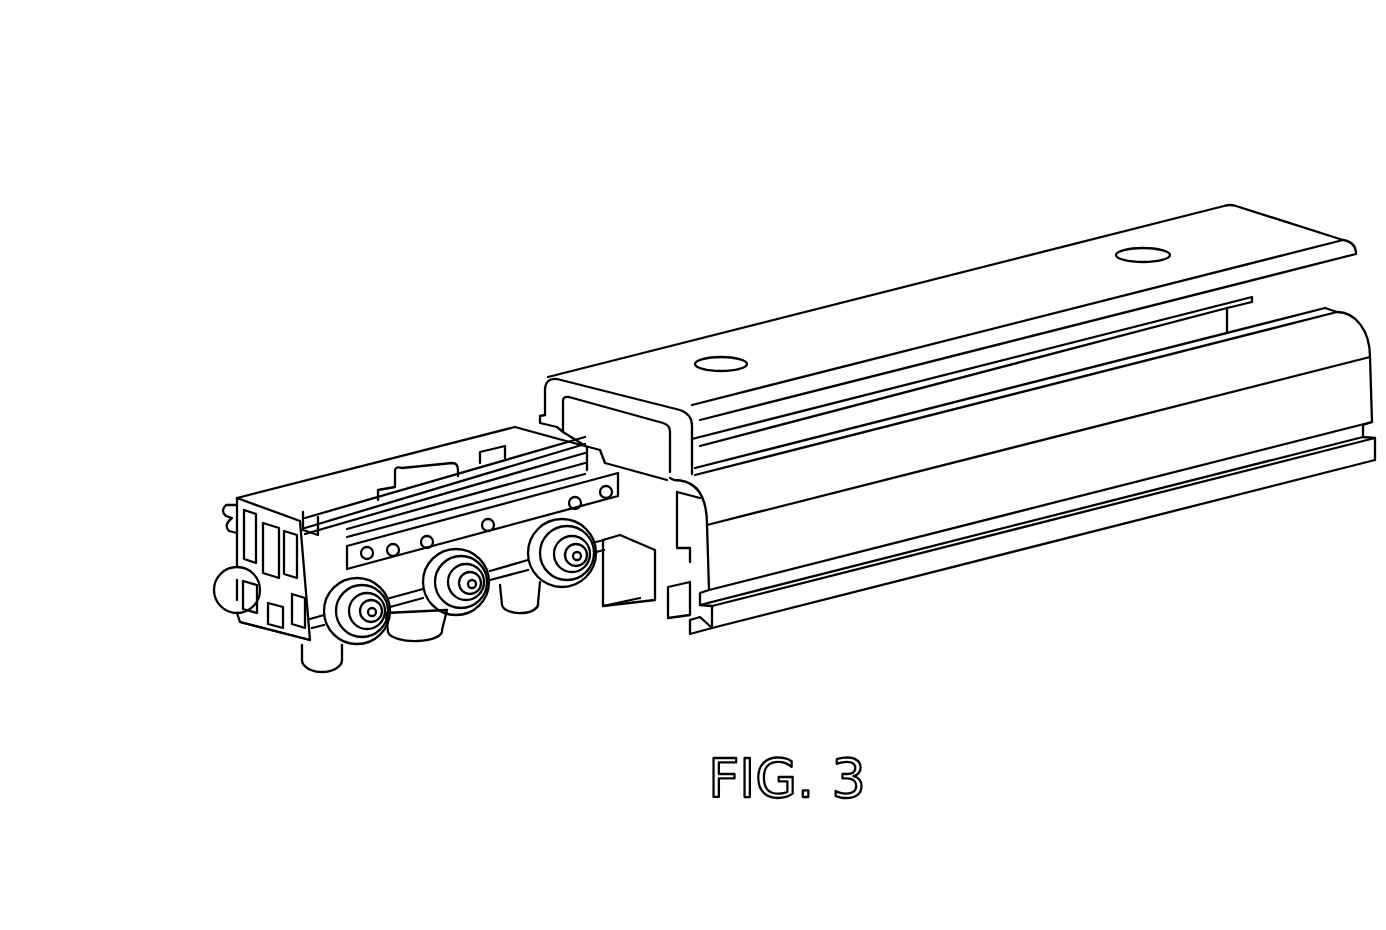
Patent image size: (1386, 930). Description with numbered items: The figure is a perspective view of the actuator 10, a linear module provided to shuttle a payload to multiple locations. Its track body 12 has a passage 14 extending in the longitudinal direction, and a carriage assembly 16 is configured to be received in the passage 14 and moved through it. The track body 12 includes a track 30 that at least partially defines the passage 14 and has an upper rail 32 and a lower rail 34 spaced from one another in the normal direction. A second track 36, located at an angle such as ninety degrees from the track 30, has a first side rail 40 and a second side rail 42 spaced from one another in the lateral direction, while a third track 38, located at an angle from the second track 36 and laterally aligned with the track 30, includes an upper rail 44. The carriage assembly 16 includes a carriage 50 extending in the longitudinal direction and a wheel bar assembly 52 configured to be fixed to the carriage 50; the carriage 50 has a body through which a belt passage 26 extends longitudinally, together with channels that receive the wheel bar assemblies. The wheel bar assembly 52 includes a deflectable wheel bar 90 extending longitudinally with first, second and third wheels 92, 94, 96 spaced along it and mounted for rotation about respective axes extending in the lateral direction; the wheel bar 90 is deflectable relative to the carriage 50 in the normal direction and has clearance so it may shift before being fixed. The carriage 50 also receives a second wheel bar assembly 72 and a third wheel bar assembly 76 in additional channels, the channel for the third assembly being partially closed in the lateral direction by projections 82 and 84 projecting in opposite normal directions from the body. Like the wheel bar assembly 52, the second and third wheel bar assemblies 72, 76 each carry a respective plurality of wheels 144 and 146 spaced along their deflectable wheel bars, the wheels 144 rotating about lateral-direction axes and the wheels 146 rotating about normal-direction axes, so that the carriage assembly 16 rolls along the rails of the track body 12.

The actuator 10 is at (1245, 140).
The track body 12 is at (912, 300).
The passage 14 is at (778, 432).
The carriage assembly 16 is at (362, 430).
The belt passage 26 is at (245, 520).
The track 30 is at (676, 560).
The upper rail 32 is at (672, 480).
The lower rail 34 is at (685, 603).
The second track 36 is at (630, 600).
The third track 38 is at (643, 470).
The first side rail 40 is at (621, 578).
The second side rail 42 is at (645, 590).
The upper rail 44 is at (613, 450).
The carriage 50 is at (278, 490).
The wheel bar assembly 52 is at (415, 592).
The second wheel bar assembly 72 is at (268, 638).
The third wheel bar assembly 76 is at (208, 592).
The projection 82 is at (243, 607).
The projection 84 is at (243, 588).
The deflectable wheel bar 90 is at (293, 623).
The first wheel 92 is at (370, 647).
The second wheel 94 is at (477, 618).
The third wheel 96 is at (547, 587).
The plurality of wheels 144 is at (313, 667).
The plurality of wheels 146 is at (233, 594).